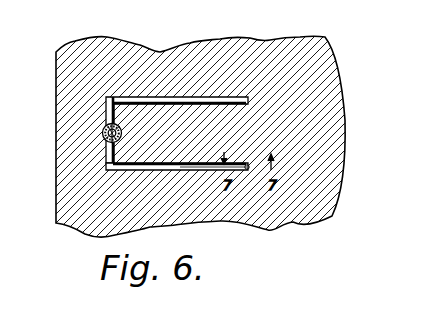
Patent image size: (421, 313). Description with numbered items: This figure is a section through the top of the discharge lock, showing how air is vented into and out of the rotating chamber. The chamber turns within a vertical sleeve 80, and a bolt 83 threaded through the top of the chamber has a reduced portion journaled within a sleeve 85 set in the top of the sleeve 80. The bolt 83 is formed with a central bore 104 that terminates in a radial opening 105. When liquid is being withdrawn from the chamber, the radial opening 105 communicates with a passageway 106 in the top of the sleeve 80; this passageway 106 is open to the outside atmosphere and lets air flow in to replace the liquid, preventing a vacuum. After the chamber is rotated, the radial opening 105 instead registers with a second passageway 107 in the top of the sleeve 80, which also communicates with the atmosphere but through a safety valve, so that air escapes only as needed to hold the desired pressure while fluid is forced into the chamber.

The vertical sleeve 80 is at (333, 87).
The bolt 83 is at (100, 133).
The sleeve 85 is at (101, 140).
The central bore 104 is at (107, 129).
The radial opening 105 is at (108, 124).
The passageway 106 is at (150, 100).
The second passageway 107 is at (175, 172).